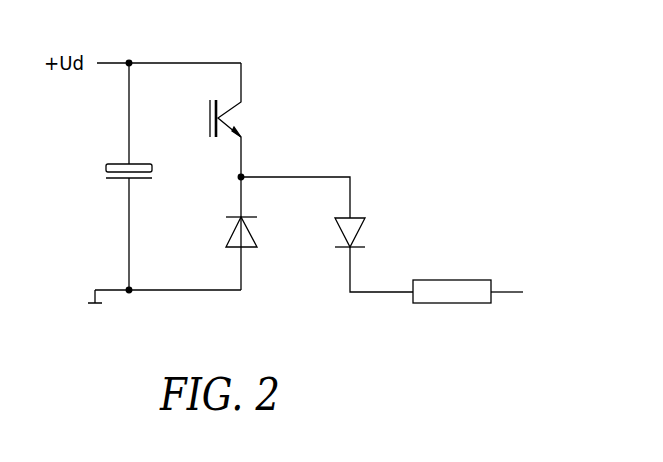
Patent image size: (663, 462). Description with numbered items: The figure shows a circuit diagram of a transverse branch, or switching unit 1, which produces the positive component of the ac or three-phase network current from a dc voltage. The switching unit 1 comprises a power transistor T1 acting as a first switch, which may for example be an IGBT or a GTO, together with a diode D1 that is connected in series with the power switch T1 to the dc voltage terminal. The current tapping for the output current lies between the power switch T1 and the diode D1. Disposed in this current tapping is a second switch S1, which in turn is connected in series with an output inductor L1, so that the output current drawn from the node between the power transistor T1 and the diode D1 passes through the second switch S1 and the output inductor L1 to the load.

The switching unit 1 is at (269, 107).
The power transistor T1 is at (246, 120).
The diode D1 is at (222, 233).
The second switch S1 is at (327, 234).
The output inductor L1 is at (469, 261).